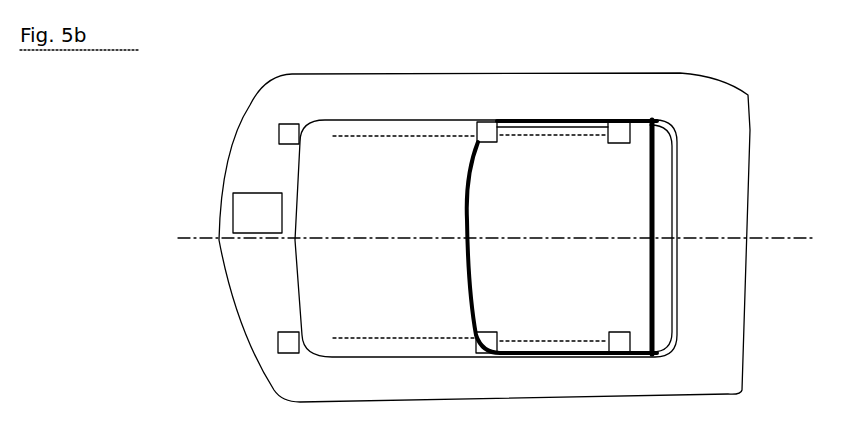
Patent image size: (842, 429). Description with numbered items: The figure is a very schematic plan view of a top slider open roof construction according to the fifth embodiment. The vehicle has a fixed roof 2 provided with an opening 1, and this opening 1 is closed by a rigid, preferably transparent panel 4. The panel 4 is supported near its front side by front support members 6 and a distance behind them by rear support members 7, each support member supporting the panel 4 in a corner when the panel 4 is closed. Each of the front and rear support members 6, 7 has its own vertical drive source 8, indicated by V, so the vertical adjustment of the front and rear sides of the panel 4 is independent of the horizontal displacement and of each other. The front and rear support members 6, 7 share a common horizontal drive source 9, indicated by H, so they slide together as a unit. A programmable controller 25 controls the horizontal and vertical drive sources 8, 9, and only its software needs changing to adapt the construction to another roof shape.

The opening 1 is at (411, 121).
The fixed roof 2 is at (720, 105).
The panel 4 is at (579, 203).
The front support member 6 is at (517, 120).
The rear support member 7 is at (650, 120).
The vertical drive source 8 is at (487, 128).
The horizontal drive source 9 is at (283, 126).
The programmable controller 25 is at (257, 213).